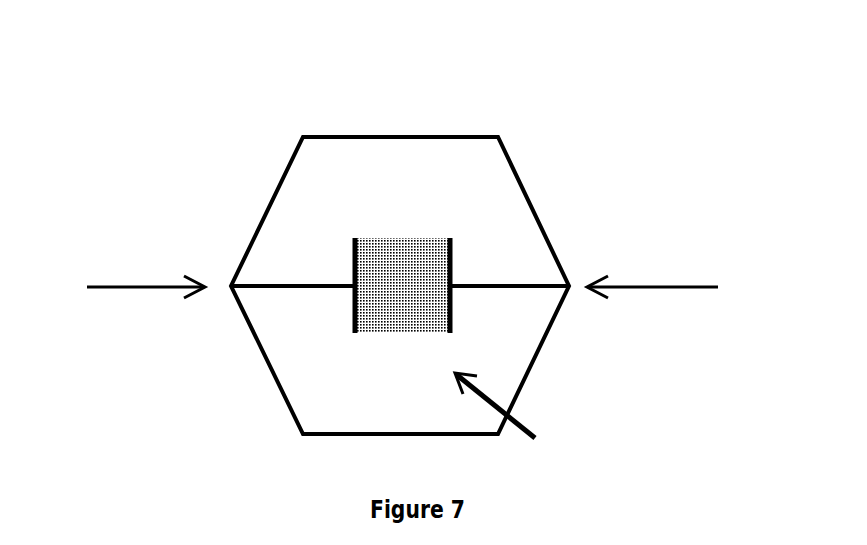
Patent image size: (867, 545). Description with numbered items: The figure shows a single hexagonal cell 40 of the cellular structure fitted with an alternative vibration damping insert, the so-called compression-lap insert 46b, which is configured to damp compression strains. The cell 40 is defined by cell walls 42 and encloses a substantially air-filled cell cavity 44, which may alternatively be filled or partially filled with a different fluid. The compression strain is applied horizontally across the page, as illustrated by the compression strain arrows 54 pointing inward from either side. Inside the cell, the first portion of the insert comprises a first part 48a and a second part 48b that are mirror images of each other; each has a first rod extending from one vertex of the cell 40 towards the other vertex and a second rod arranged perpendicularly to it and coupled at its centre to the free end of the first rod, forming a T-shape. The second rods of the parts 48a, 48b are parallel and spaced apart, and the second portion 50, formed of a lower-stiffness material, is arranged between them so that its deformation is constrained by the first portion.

The cell 40 is at (399, 256).
The cell walls 42 is at (525, 237).
The cell cavity 44 is at (523, 421).
The compression-lap insert 46b is at (278, 229).
The first part 48a is at (503, 290).
The second part 48b is at (301, 287).
The second portion 50 is at (418, 248).
The compression strain arrows 54 is at (102, 283).